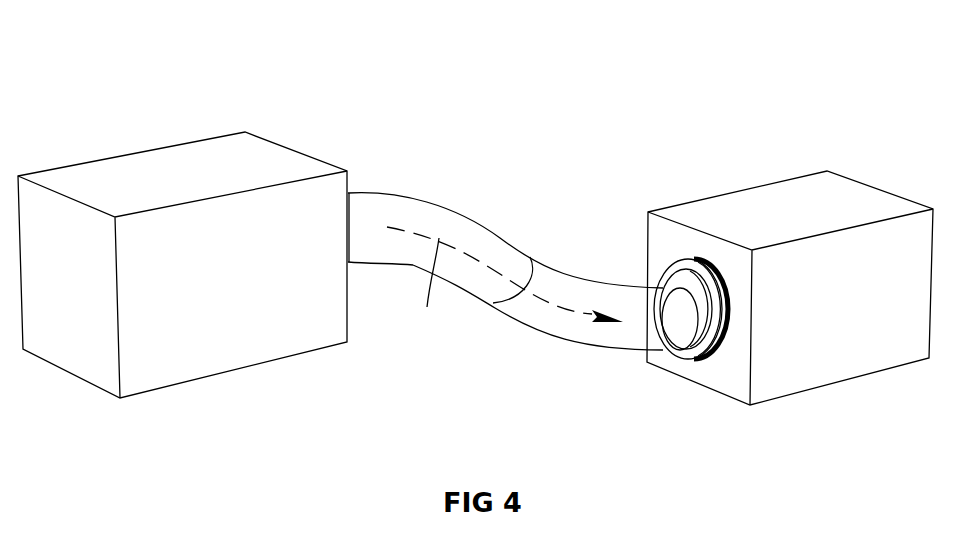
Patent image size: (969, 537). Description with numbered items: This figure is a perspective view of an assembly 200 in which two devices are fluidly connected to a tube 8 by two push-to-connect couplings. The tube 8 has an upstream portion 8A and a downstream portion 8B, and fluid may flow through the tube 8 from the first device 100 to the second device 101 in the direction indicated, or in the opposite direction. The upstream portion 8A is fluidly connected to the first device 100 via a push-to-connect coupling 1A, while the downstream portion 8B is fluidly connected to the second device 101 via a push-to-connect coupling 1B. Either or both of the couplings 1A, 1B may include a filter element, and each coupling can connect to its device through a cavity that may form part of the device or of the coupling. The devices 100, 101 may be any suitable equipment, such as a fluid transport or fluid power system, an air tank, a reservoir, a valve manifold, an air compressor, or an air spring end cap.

The assembly 200 is at (134, 115).
The first device 100 is at (233, 276).
The second device 101 is at (827, 311).
The tube 8 is at (498, 252).
The upstream portion 8A is at (360, 246).
The downstream portion 8B is at (674, 317).
The push-to-connect coupling 1A is at (353, 209).
The push-to-connect coupling 1B is at (647, 275).